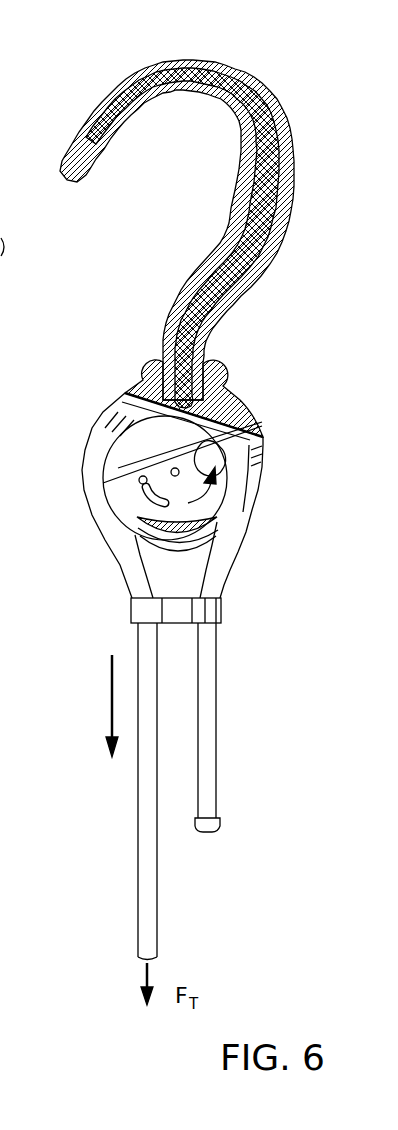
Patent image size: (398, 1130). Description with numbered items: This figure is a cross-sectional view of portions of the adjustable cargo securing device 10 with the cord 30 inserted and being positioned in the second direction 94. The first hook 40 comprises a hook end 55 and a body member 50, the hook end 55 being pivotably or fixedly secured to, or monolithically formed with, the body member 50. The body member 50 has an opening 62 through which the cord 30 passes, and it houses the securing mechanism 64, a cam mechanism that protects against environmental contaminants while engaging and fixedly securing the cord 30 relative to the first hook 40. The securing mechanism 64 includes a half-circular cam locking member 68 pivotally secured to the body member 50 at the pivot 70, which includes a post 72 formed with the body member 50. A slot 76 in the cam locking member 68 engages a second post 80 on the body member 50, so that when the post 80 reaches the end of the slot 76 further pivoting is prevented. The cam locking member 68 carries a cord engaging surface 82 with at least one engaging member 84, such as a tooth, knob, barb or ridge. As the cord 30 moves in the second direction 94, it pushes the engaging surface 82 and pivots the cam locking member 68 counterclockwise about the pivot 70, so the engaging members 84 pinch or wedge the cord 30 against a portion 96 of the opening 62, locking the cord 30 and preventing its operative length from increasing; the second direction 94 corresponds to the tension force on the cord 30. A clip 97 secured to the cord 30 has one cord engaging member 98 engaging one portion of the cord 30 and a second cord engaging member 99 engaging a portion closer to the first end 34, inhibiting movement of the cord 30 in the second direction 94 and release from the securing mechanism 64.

The adjustable cargo securing device 10 is at (258, 556).
The cord 30 is at (140, 824).
The first end 34 is at (213, 760).
The first hook 40 is at (243, 297).
The body member 50 is at (240, 387).
The hook end 55 is at (257, 83).
The opening 62 is at (108, 402).
The securing mechanism 64 is at (87, 412).
The cam locking member 68 is at (217, 470).
The pivot 70 is at (184, 478).
The post 72 is at (260, 412).
The slot 76 is at (140, 500).
The second post 80 is at (139, 481).
The cord engaging surface 82 is at (115, 467).
The engaging member 84 is at (265, 427).
The second direction 94 is at (110, 723).
The portion of the opening 96 is at (237, 395).
The clip 97 is at (175, 612).
The cord engaging member 98 is at (223, 607).
The second cord engaging member 99 is at (130, 605).